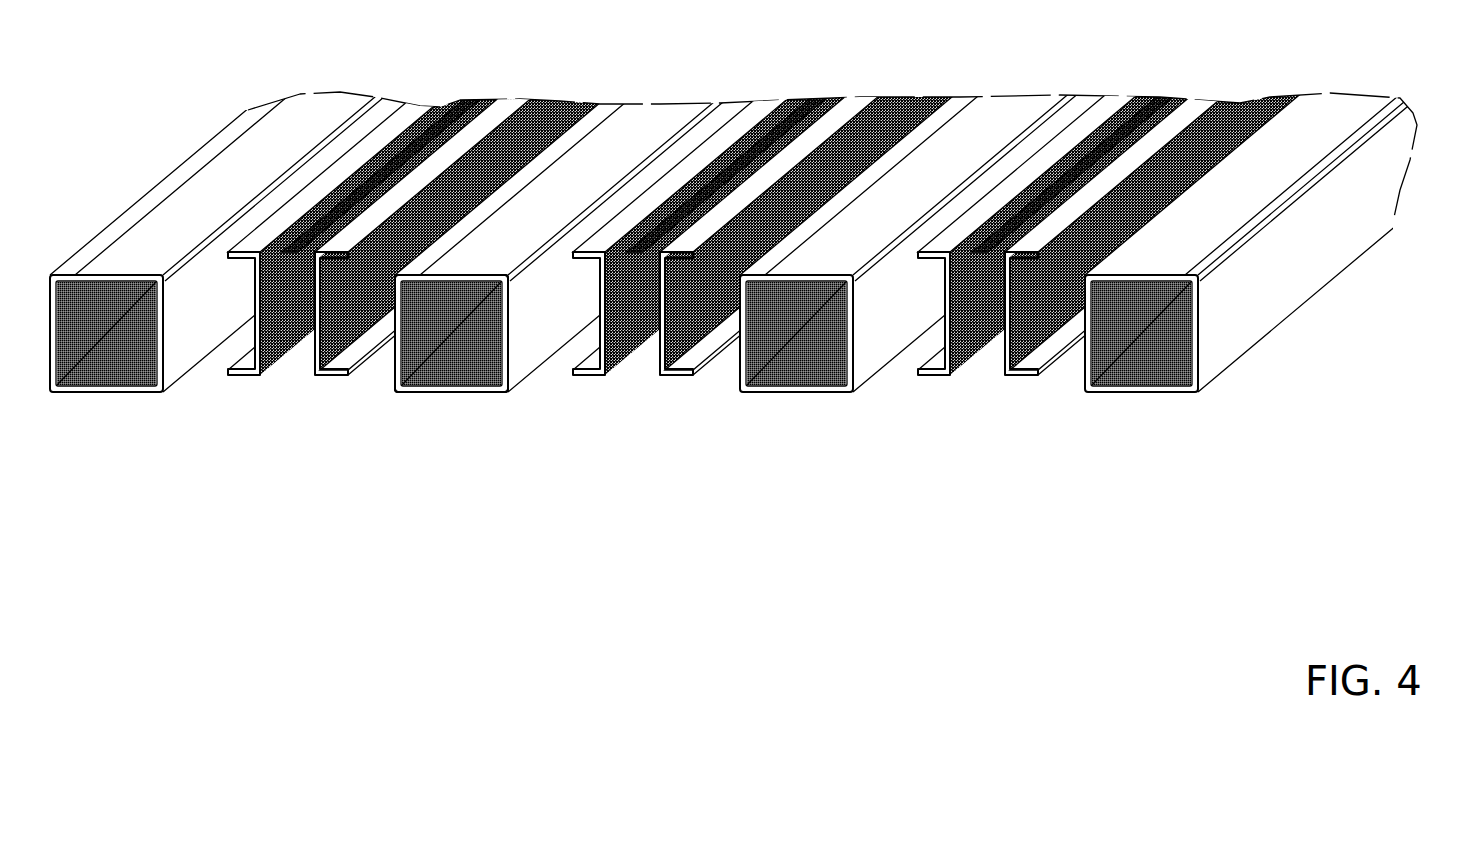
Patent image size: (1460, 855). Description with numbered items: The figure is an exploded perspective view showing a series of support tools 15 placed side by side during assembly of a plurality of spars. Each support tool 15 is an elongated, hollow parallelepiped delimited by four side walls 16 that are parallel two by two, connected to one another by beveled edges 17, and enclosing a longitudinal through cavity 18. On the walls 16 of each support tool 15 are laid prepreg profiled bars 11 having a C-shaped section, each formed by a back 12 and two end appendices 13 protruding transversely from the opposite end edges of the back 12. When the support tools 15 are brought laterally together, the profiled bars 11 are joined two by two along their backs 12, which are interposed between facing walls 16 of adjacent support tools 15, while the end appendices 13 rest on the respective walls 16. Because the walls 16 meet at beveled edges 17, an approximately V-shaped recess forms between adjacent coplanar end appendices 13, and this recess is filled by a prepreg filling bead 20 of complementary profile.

The profiled bar 11 is at (295, 200).
The back 12 is at (553, 110).
The end appendix 13 is at (514, 103).
The support tool 15 is at (103, 424).
The side wall 16 is at (648, 114).
The beveled edge 17 is at (396, 272).
The longitudinal through cavity 18 is at (476, 346).
The filling bead 20 is at (436, 104).